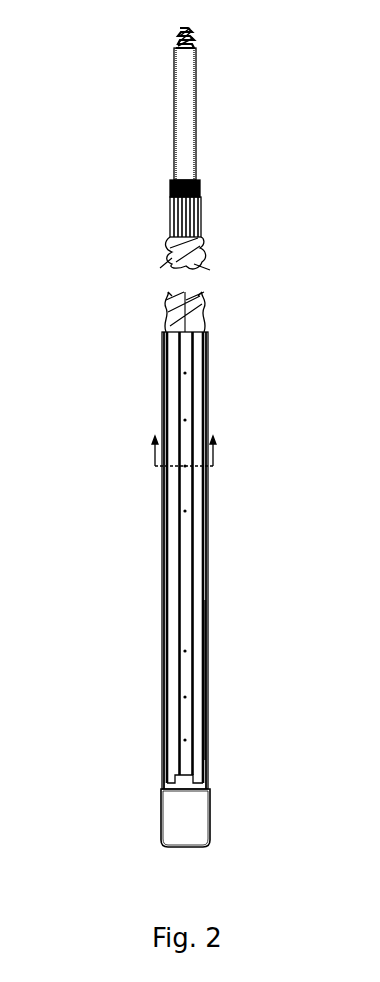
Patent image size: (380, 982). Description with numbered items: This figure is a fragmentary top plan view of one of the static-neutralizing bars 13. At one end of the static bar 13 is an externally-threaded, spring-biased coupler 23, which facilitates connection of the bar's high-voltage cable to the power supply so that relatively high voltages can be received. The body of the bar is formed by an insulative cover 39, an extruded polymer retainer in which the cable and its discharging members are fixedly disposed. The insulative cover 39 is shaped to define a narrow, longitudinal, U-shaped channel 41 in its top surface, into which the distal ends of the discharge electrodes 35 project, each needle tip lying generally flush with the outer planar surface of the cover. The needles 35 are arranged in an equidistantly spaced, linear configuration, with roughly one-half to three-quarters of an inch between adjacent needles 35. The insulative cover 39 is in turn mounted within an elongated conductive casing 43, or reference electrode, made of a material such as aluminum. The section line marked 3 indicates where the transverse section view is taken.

The coupler 23 is at (197, 52).
The casing 43 is at (163, 352).
The insulative cover 39 is at (203, 355).
The discharge electrode 35 is at (183, 555).
The U-shaped channel 41 is at (205, 673).
The static-neutralizing bar 13 is at (258, 833).
The section line 3- 3 is at (183, 439).